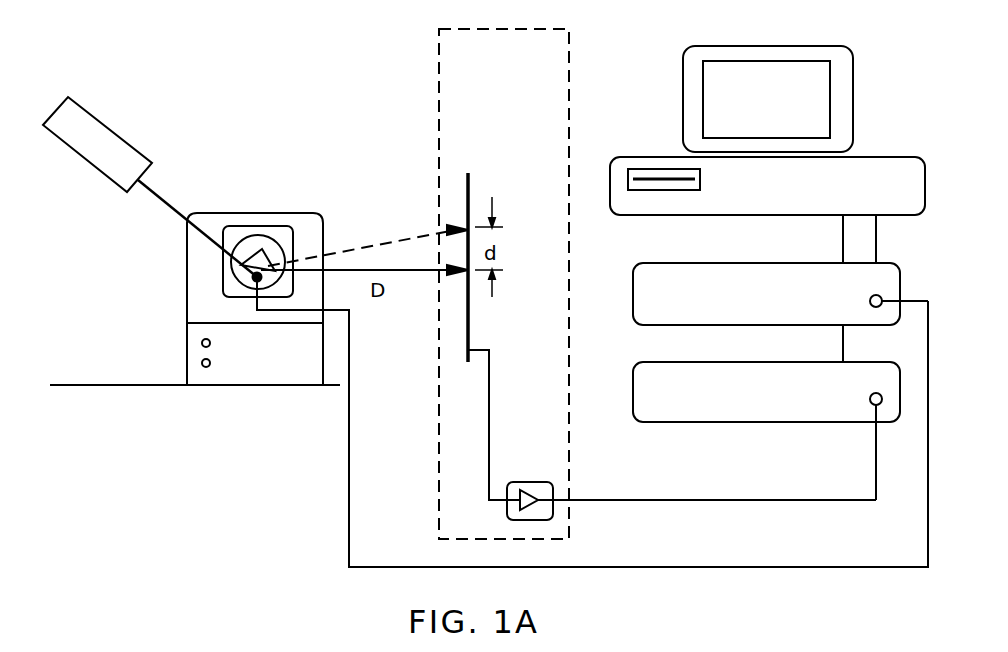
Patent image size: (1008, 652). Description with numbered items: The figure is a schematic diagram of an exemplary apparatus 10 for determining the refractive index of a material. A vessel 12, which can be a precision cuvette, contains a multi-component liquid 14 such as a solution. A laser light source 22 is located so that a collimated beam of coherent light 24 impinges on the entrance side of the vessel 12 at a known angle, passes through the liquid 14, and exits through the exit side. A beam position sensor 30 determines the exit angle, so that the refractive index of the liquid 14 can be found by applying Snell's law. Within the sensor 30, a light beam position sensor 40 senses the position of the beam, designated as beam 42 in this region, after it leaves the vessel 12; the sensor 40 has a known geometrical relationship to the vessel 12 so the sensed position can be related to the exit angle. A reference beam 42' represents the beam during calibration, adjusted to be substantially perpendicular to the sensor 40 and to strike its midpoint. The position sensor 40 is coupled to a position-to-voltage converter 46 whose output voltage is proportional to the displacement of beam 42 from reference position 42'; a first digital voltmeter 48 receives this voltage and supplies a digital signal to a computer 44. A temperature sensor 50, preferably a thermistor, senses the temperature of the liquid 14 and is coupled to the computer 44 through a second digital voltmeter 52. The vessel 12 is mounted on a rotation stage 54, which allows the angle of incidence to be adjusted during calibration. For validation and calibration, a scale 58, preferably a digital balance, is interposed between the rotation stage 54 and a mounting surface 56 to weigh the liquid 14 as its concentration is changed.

The apparatus 10 is at (265, 472).
The vessel 12 is at (268, 258).
The multi-component liquid 14 is at (262, 250).
The laser light source 22 is at (97, 118).
The collimated beam of coherent light 24 is at (173, 200).
The beam position sensor 30 is at (438, 40).
The light beam position sensor 40 is at (466, 178).
The beam of light 42 is at (368, 216).
The reference beam 42' is at (364, 304).
The computer 44 is at (643, 157).
The position-to-voltage converter 46 is at (537, 482).
The first digital voltmeter 48 is at (715, 423).
The temperature sensor 50 is at (250, 271).
The second digital voltmeter 52 is at (728, 263).
The rotation stage 54 is at (222, 282).
The mounting surface 56 is at (100, 385).
The scale 58 is at (187, 350).